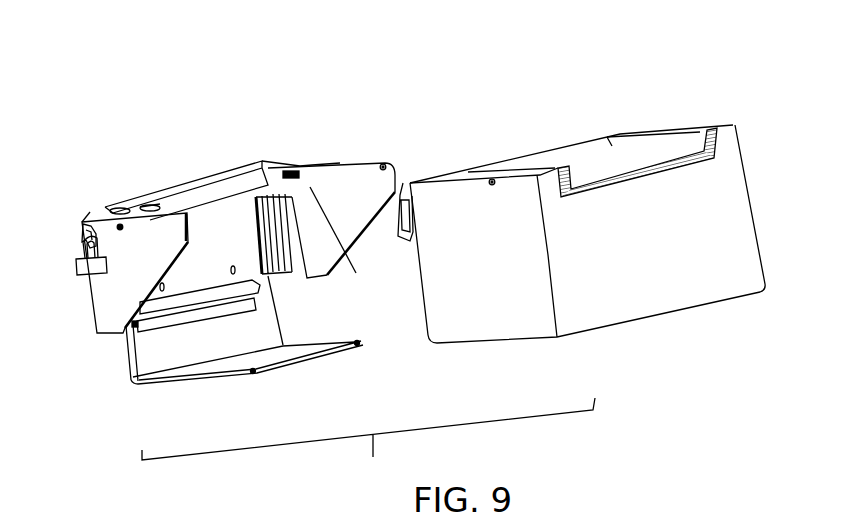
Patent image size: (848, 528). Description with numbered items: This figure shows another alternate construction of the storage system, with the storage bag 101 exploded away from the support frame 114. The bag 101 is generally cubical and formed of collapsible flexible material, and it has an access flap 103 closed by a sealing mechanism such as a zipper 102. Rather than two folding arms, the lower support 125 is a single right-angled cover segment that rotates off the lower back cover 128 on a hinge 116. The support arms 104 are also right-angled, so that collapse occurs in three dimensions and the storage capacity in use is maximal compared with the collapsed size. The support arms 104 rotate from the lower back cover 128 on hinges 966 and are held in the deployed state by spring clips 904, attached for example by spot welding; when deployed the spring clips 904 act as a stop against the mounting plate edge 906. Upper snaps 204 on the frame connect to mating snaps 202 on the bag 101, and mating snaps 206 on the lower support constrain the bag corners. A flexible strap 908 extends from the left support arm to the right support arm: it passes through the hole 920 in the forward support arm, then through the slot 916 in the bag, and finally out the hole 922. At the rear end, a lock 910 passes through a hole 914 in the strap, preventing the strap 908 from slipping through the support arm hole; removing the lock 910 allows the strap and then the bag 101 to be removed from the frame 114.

The storage bag 101 is at (577, 333).
The zipper 102 is at (715, 143).
The access flap 103 is at (590, 148).
The support arms 104 is at (357, 163).
The support frame 114 is at (205, 182).
The hinge 116 is at (133, 335).
The lower support 125 is at (178, 385).
The lower back cover 128 is at (185, 263).
The mating snaps 202 is at (493, 180).
The upper snaps 204 is at (383, 166).
The mating snaps 206 is at (253, 371).
The spring clips 904 is at (120, 208).
The mounting plate edge 906 is at (152, 207).
The strap 908 is at (227, 202).
The lock 910 is at (84, 276).
The hole 914 is at (92, 237).
The slot 916 is at (403, 182).
The hole 920 is at (310, 187).
The hole 922 is at (88, 212).
The hinges 966 is at (280, 272).